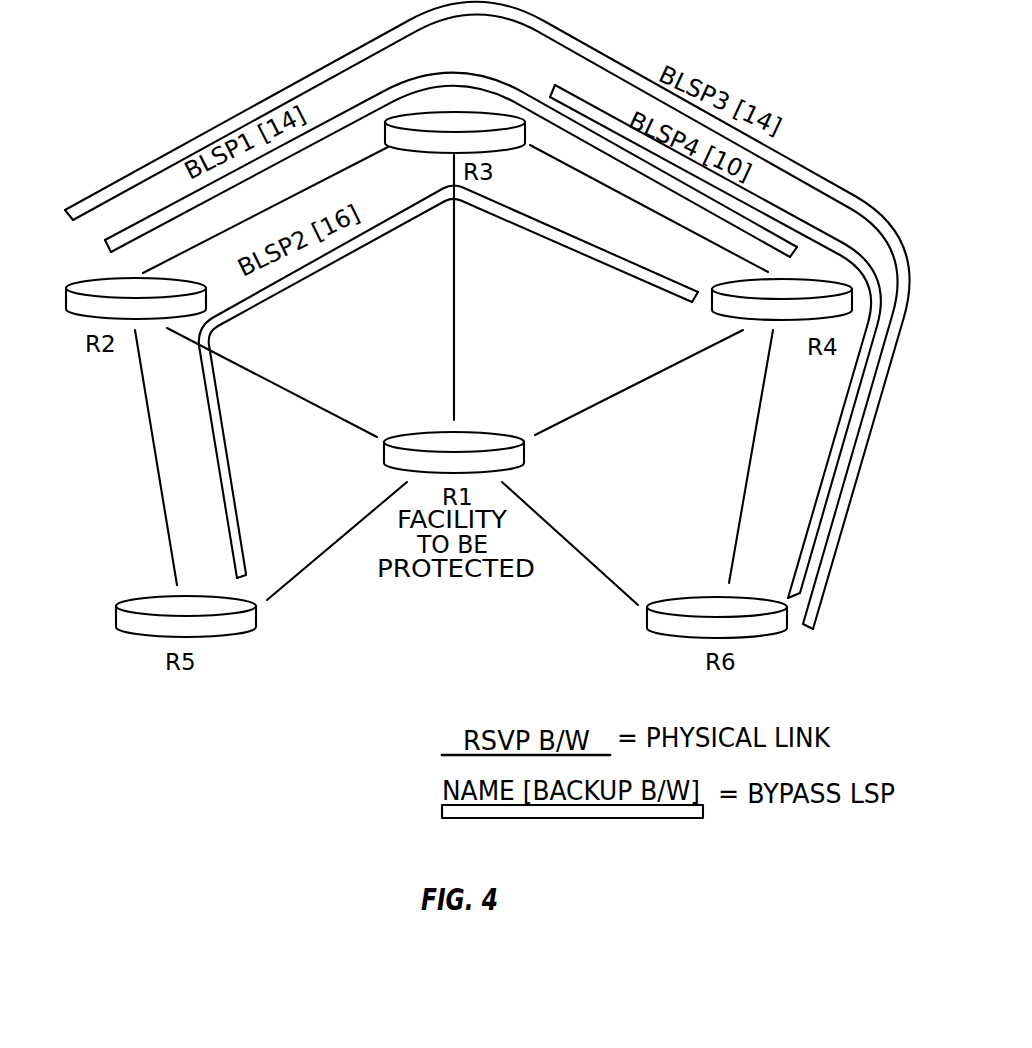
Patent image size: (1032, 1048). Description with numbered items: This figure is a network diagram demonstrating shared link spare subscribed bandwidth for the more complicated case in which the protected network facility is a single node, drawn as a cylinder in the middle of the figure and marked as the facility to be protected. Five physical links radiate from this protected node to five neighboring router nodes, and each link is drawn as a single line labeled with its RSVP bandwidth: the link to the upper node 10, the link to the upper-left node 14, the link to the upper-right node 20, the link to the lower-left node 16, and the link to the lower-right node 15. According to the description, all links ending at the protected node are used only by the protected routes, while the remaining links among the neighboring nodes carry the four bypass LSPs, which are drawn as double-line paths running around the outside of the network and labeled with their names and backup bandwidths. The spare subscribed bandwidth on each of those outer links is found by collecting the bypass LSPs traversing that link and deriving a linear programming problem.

The physical link R3-R1 (RSVP bandwidth 10) 10 is at (472, 287).
The physical link R2-R1 (RSVP bandwidth 14) 14 is at (272, 382).
The physical link R4-R1 (RSVP bandwidth 20) 20 is at (639, 382).
The physical link R5-R1 (RSVP bandwidth 16) 16 is at (337, 541).
The physical link R1-R6 (RSVP bandwidth 15) 15 is at (570, 543).